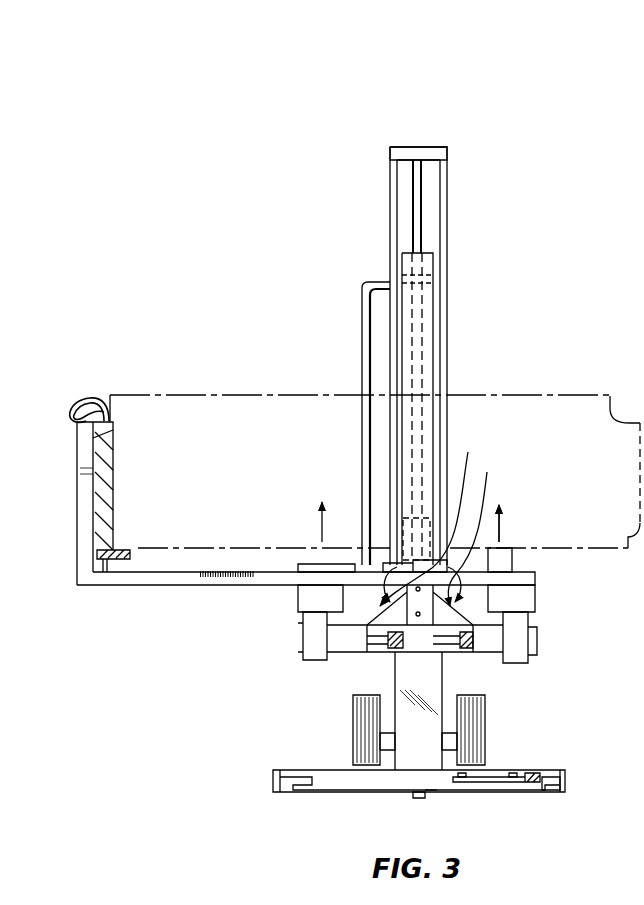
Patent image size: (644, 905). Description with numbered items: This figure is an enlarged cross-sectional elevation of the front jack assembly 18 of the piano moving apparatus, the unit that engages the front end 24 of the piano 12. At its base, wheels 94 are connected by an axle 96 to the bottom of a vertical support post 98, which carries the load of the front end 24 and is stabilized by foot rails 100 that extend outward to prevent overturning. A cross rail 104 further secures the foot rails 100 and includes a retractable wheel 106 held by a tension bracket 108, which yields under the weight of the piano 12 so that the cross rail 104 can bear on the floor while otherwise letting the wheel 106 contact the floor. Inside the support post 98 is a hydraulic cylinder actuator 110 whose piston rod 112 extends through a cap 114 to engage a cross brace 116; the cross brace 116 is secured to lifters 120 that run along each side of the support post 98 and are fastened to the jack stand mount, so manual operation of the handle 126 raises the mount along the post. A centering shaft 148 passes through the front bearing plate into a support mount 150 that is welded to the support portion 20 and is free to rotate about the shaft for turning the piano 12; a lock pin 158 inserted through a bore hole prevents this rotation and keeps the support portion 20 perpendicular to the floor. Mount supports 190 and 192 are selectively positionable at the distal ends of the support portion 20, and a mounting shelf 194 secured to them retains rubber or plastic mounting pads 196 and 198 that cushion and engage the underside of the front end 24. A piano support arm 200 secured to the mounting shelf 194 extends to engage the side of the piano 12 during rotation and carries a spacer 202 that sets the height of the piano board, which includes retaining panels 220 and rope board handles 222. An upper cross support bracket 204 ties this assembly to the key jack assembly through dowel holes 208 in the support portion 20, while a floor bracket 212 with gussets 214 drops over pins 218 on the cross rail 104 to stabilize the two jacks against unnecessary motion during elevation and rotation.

The piano 12 is at (227, 394).
The front jack assembly 18 is at (302, 303).
The support portion 20 is at (330, 655).
The front end 24 is at (232, 548).
The wheels 94 is at (353, 722).
The axle 96 is at (388, 735).
The support post 98 is at (430, 682).
The foot rails 100 is at (560, 780).
The cross rail 104 is at (336, 782).
The retractable wheel 106 is at (415, 797).
The tension bracket 108 is at (433, 793).
The hydraulic cylinder actuator 110 is at (407, 525).
The piston rod 112 is at (412, 175).
The cap 114 is at (408, 256).
The cross brace 116 is at (420, 150).
The lifters 120 is at (447, 205).
The handle 126 is at (362, 292).
The centering shaft 148 is at (433, 517).
The support mount 150 is at (481, 528).
The lock pin 158 is at (470, 560).
The mount support 190 is at (305, 622).
The mount support 192 is at (520, 624).
The mounting shelf 194 is at (305, 603).
The mounting pad 196 is at (306, 560).
The mounting pad 198 is at (505, 556).
The piano support arm 200 is at (85, 450).
The spacer 202 is at (102, 566).
The upper cross support bracket 204 is at (388, 645).
The dowel holes 208 is at (385, 640).
The floor bracket 212 is at (545, 792).
The gussets 214 is at (508, 786).
The pins 218 is at (513, 772).
The retaining panels 220 is at (118, 549).
The board handles 222 is at (82, 400).